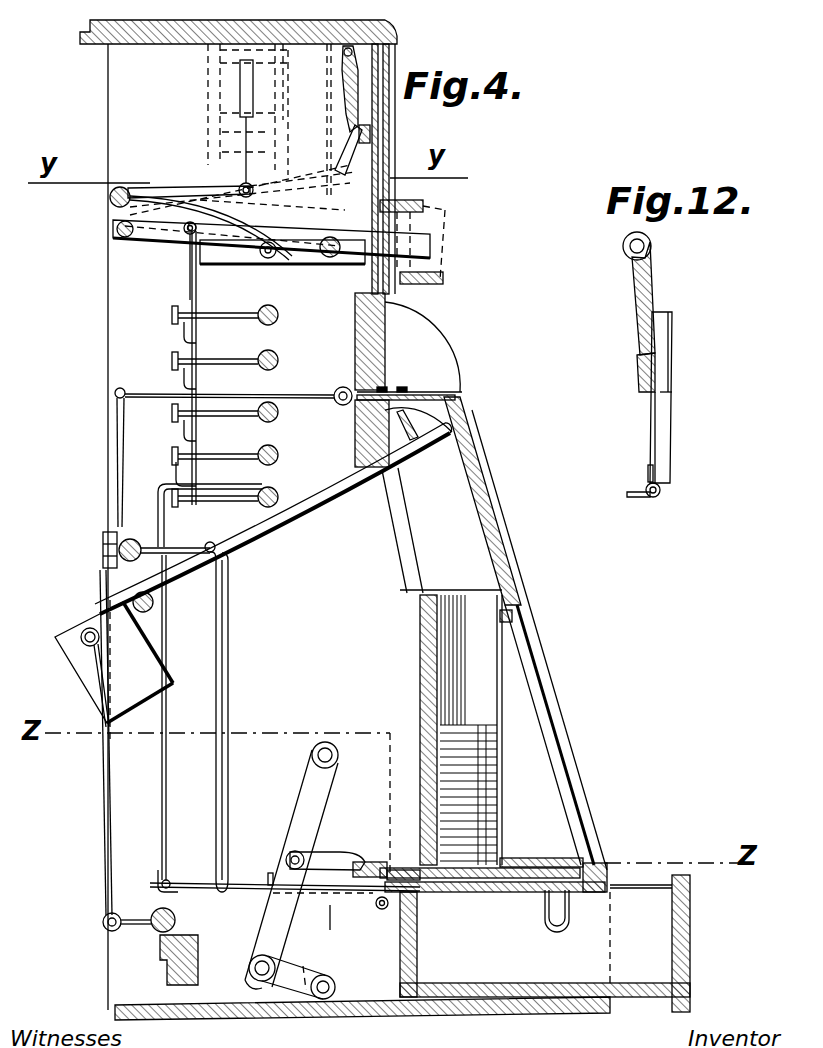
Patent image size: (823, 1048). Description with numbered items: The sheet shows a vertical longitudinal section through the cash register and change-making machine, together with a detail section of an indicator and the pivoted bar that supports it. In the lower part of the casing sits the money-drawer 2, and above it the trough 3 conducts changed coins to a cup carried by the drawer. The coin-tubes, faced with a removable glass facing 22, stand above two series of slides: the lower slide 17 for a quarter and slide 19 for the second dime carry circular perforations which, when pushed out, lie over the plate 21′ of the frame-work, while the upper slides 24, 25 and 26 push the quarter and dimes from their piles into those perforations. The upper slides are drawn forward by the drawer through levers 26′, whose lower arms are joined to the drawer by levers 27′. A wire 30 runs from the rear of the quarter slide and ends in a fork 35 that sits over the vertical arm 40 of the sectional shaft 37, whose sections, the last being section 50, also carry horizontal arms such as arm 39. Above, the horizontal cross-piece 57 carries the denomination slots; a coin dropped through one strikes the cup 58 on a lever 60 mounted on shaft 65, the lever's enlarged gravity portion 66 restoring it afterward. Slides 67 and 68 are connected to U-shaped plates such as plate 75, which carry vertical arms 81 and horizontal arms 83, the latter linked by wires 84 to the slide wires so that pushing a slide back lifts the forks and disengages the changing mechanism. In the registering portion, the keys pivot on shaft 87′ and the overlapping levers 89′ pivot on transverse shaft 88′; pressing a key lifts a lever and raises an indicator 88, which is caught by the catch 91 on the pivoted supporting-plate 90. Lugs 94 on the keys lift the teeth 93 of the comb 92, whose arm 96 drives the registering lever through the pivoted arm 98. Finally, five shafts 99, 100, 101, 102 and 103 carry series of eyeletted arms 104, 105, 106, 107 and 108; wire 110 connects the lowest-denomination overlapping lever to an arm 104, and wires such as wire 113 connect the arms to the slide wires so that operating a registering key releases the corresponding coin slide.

In FIG. 4, the horizontal supporting-plate 90 is at (350, 80).
In FIG. 12, the horizontal supporting-plate 90 is at (635, 262).
In FIG. 4, the catch or shoulder 91 is at (358, 132).
In FIG. 12, the catch or shoulder 91 is at (637, 368).
In FIG. 4, the pivotally-secured arm 98 is at (264, 121).
In FIG. 4, the horizontal arm 96 is at (221, 179).
In FIG. 4, the comb 92 is at (134, 183).
In FIG. 4, the indicator 88 is at (350, 160).
In FIG. 4, the teeth 93 is at (268, 238).
In FIG. 4, the transverse shaft 88′ is at (254, 239).
In FIG. 4, the levers 89′ is at (188, 240).
In FIG. 4, the lugs 94 is at (268, 259).
In FIG. 4, the shaft 87′ is at (330, 258).
In FIG. 4, the wire 110 is at (192, 295).
In FIG. 4, the horizontal arms 104 is at (220, 305).
In FIG. 4, the shaft 99 is at (292, 311).
In FIG. 4, the horizontal arms 105 is at (215, 350).
In FIG. 4, the shaft 100 is at (298, 353).
In FIG. 4, the horizontal arms 106 is at (240, 393).
In FIG. 4, the shaft 101 is at (254, 411).
In FIG. 4, the horizontal arms 107 is at (216, 446).
In FIG. 4, the shaft 102 is at (297, 454).
In FIG. 4, the shaft 103 is at (253, 487).
In FIG. 4, the horizontal arms 108 is at (222, 502).
In FIG. 4, the vertical arms 81 is at (100, 462).
In FIG. 4, the plate 75 is at (104, 560).
In FIG. 4, the horizontal arms 83 is at (194, 538).
In FIG. 4, the shaft 65 is at (140, 587).
In FIG. 4, the enlarged gravity portions 66 is at (84, 682).
In FIG. 4, the lever 60 is at (273, 518).
In FIG. 4, the wires 84 is at (223, 670).
In FIG. 4, the slide 67 is at (112, 790).
In FIG. 4, the wire 113 is at (167, 800).
In FIG. 4, the staples or forks 35 is at (152, 877).
In FIG. 4, the vertical arm 40 is at (132, 910).
In FIG. 4, the sectional shaft 37 is at (176, 920).
In FIG. 4, the horizontal arm 39 is at (157, 930).
In FIG. 4, the wire 30 is at (285, 900).
In FIG. 4, the levers 26′ is at (337, 770).
In FIG. 4, the slide 25 is at (327, 844).
In FIG. 4, the slide 24 is at (389, 855).
In FIG. 4, the levers 27′ is at (302, 972).
In FIG. 4, the slide 68 is at (445, 370).
In FIG. 4, the horizontal cross-piece 57 is at (456, 392).
In FIG. 4, the cups 58 is at (455, 412).
In FIG. 4, the removable glass facing 22 is at (525, 633).
In FIG. 4, the slide 26 is at (484, 727).
In FIG. 4, the slide 17 is at (450, 892).
In FIG. 4, the plate 21′ is at (495, 892).
In FIG. 4, the slide 19 is at (540, 892).
In FIG. 4, the trough 3 is at (545, 943).
In FIG. 4, the money-drawer 2 is at (650, 905).
In FIG. 4, the section 50 is at (321, 913).